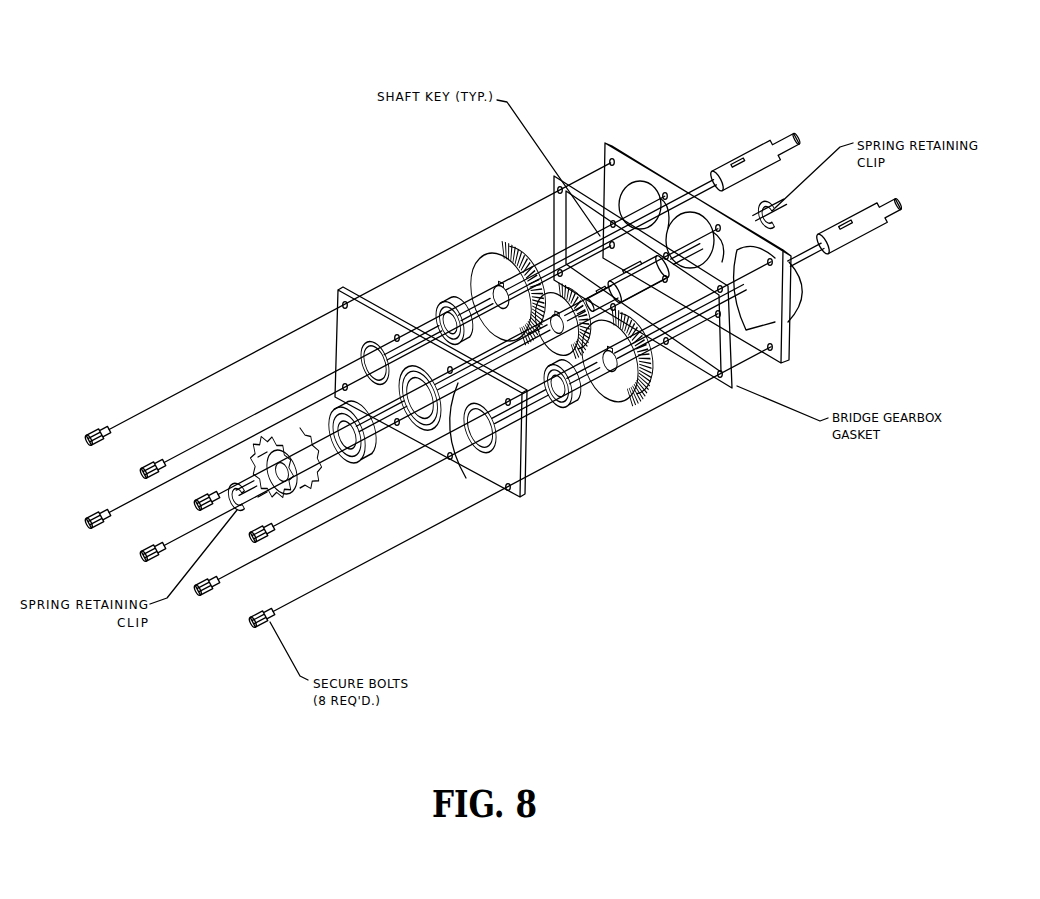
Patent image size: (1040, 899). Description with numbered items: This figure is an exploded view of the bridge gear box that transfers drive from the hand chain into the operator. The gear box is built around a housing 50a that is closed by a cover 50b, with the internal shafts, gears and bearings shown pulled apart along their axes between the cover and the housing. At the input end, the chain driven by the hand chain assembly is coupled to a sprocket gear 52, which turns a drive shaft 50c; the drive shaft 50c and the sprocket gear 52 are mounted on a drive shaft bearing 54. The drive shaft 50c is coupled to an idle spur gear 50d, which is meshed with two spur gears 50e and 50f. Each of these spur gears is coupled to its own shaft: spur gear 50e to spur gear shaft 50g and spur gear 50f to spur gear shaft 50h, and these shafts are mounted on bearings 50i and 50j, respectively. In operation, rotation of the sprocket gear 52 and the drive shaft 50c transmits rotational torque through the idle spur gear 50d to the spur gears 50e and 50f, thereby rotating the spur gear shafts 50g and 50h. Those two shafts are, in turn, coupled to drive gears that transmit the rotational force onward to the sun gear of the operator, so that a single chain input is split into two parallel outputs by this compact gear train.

The housing 50a is at (804, 264).
The cover 50b is at (307, 384).
The drive shaft 50c is at (642, 300).
The idle spur gear 50d is at (548, 318).
The spur gear 50e is at (473, 253).
The spur gear 50f is at (637, 393).
The spur gear shaft 50g is at (747, 148).
The spur gear shaft 50h is at (858, 243).
The bearing 50i is at (361, 279).
The bearing 50j is at (632, 484).
The sprocket gear 52 is at (207, 423).
The drive shaft bearing 54 is at (426, 518).